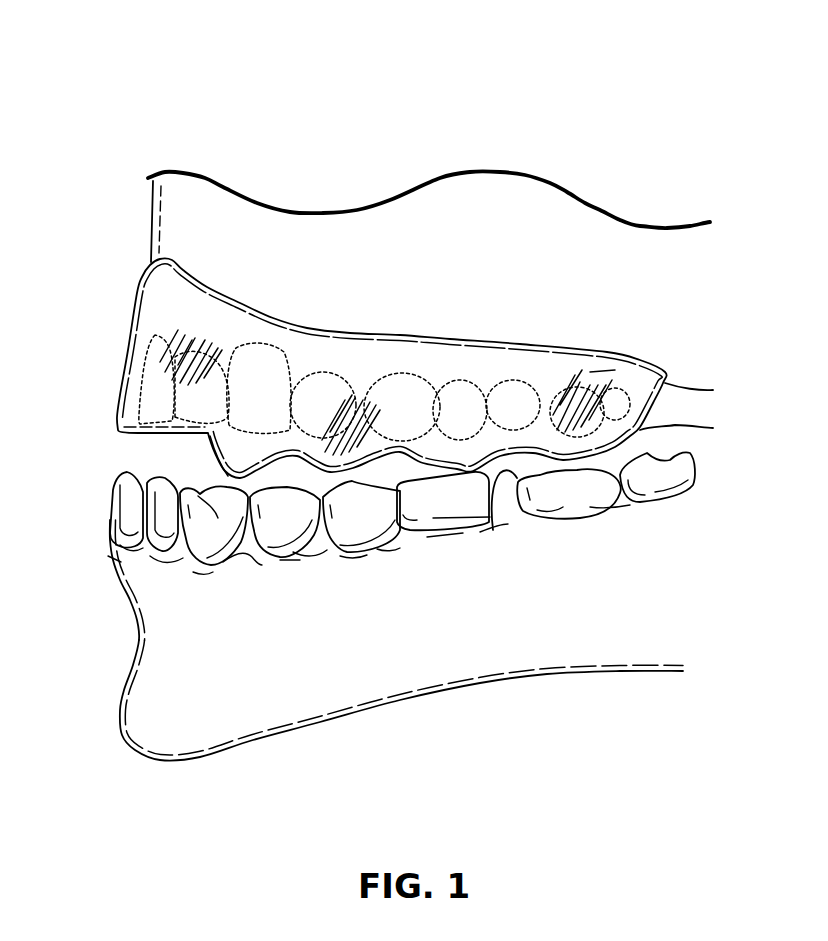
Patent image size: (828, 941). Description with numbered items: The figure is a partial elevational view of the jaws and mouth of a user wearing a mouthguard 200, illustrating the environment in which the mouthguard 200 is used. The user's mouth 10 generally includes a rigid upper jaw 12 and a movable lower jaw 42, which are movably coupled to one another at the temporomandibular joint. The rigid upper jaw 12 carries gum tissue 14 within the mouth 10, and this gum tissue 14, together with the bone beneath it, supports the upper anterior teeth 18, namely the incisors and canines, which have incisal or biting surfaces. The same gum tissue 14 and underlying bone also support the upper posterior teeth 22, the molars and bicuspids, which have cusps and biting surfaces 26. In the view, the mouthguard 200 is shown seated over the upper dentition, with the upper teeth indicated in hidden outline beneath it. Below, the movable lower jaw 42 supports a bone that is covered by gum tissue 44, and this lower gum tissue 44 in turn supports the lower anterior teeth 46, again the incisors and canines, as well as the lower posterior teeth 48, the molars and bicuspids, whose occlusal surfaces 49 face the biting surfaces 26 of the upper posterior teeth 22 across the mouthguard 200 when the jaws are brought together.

The mouth 10 is at (109, 84).
The rigid upper jaw 12 is at (280, 228).
The gum tissue 14 is at (175, 310).
The anterior teeth 18 is at (212, 441).
The mouthguard 200 is at (208, 289).
The posterior teeth 22 is at (507, 397).
The biting surfaces 26 is at (483, 440).
The movable lower jaw 42 is at (150, 720).
The gum tissue 44 is at (120, 557).
The anterior teeth 46 is at (127, 503).
The posterior teeth 48 is at (577, 495).
The occlusal surfaces 49 is at (495, 490).